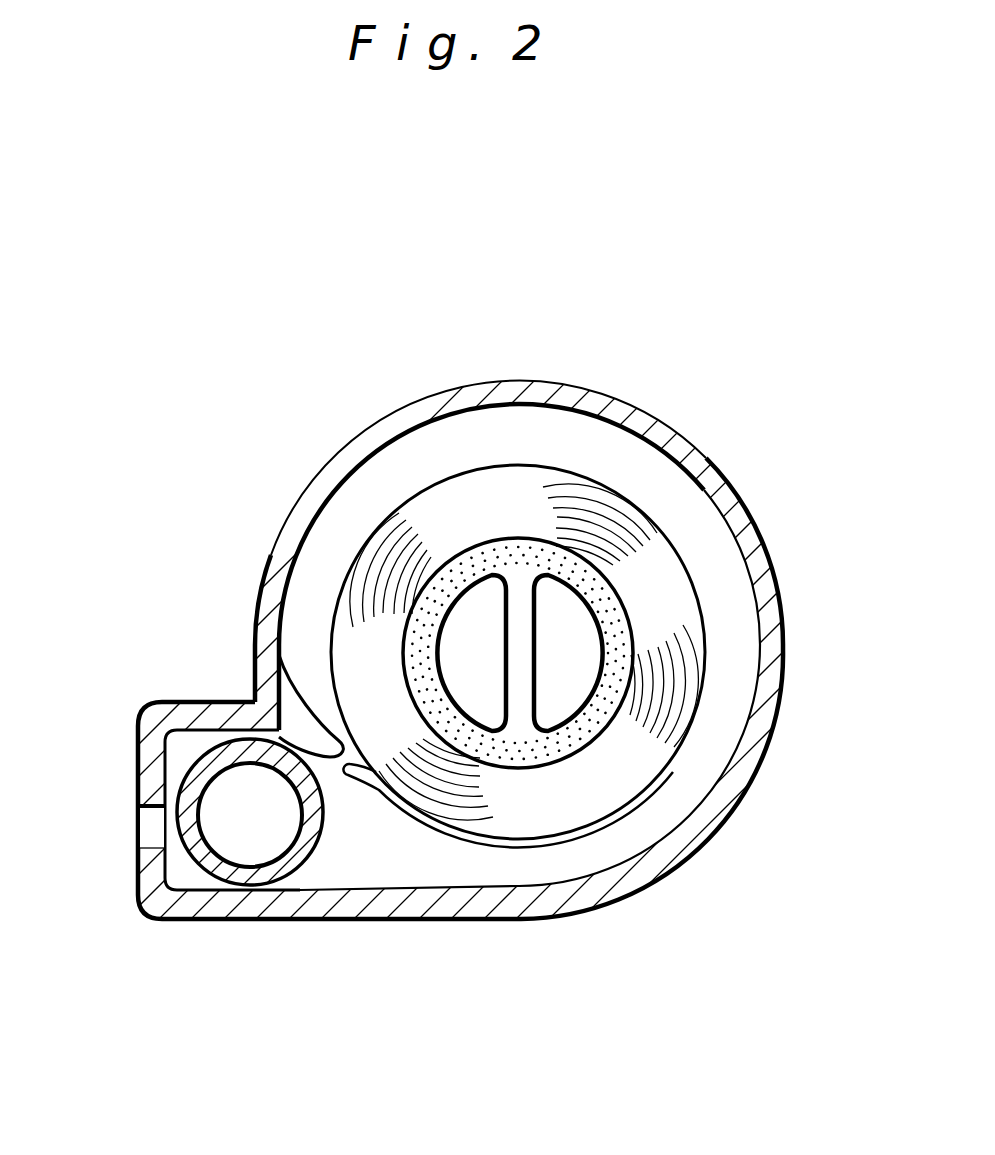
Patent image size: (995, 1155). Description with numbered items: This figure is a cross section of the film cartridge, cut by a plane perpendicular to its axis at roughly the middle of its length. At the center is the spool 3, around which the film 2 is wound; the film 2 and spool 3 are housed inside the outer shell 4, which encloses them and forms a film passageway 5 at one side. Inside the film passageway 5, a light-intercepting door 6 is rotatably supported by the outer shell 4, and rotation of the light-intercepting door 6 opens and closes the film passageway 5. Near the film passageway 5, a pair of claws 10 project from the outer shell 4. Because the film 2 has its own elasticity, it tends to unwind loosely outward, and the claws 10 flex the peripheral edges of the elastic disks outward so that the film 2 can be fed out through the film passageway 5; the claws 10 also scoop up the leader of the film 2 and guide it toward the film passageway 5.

The film 2 is at (471, 514).
The spool 3 is at (557, 750).
The outer shell 4 is at (768, 552).
The film passageway 5 is at (147, 823).
The light-intercepting door 6 is at (303, 856).
The claws 10 is at (289, 724).